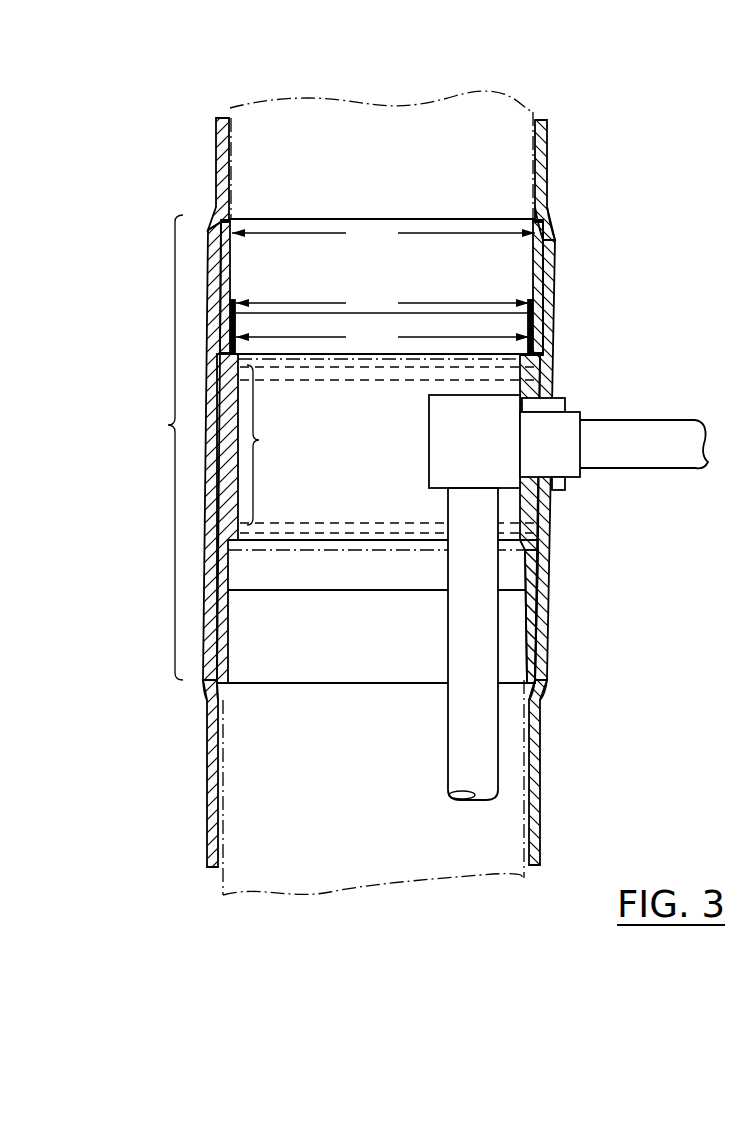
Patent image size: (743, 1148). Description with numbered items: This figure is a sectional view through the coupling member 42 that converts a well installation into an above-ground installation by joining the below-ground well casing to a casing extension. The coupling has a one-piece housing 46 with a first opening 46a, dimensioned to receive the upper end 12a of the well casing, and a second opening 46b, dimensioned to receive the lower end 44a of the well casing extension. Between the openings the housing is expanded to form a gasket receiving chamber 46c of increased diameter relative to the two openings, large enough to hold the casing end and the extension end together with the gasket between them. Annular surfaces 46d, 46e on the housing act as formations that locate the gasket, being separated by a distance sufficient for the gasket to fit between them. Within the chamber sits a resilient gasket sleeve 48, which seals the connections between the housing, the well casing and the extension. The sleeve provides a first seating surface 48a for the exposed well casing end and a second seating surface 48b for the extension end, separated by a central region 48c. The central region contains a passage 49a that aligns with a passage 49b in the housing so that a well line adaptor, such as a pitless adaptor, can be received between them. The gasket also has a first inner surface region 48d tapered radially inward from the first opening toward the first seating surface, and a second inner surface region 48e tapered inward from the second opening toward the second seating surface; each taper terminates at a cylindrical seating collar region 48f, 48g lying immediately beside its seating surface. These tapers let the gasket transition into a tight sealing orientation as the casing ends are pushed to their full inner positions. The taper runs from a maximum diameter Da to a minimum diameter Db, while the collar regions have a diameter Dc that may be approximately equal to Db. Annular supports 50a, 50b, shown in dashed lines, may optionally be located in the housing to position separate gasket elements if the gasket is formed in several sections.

The upper end of the well casing 12a is at (536, 880).
The coupling member 42 is at (185, 198).
The lower end of the well casing extension 44a is at (527, 110).
The housing 46 is at (388, 506).
The first opening 46a is at (263, 847).
The second opening 46b is at (256, 150).
The gasket receiving chamber 46c is at (339, 447).
The annular surface 46d is at (548, 213).
The annular surface 46e is at (545, 680).
The gasket sleeve 48 is at (434, 439).
The first seating surface 48a is at (530, 545).
The second seating surface 48b is at (520, 360).
The central region 48c is at (378, 518).
The first inner surface region 48d is at (535, 620).
The second inner surface region 48e is at (530, 296).
The seating collar region 48f is at (228, 585).
The seating collar region 48g is at (237, 336).
The passage 49a is at (537, 398).
The passage 49b is at (568, 402).
The annular support 50a is at (328, 522).
The annular support 50b is at (322, 374).
The maximum diameter Da is at (383, 234).
The minimum diameter Db is at (382, 303).
The diameter of the seating collar regions Dc is at (382, 338).